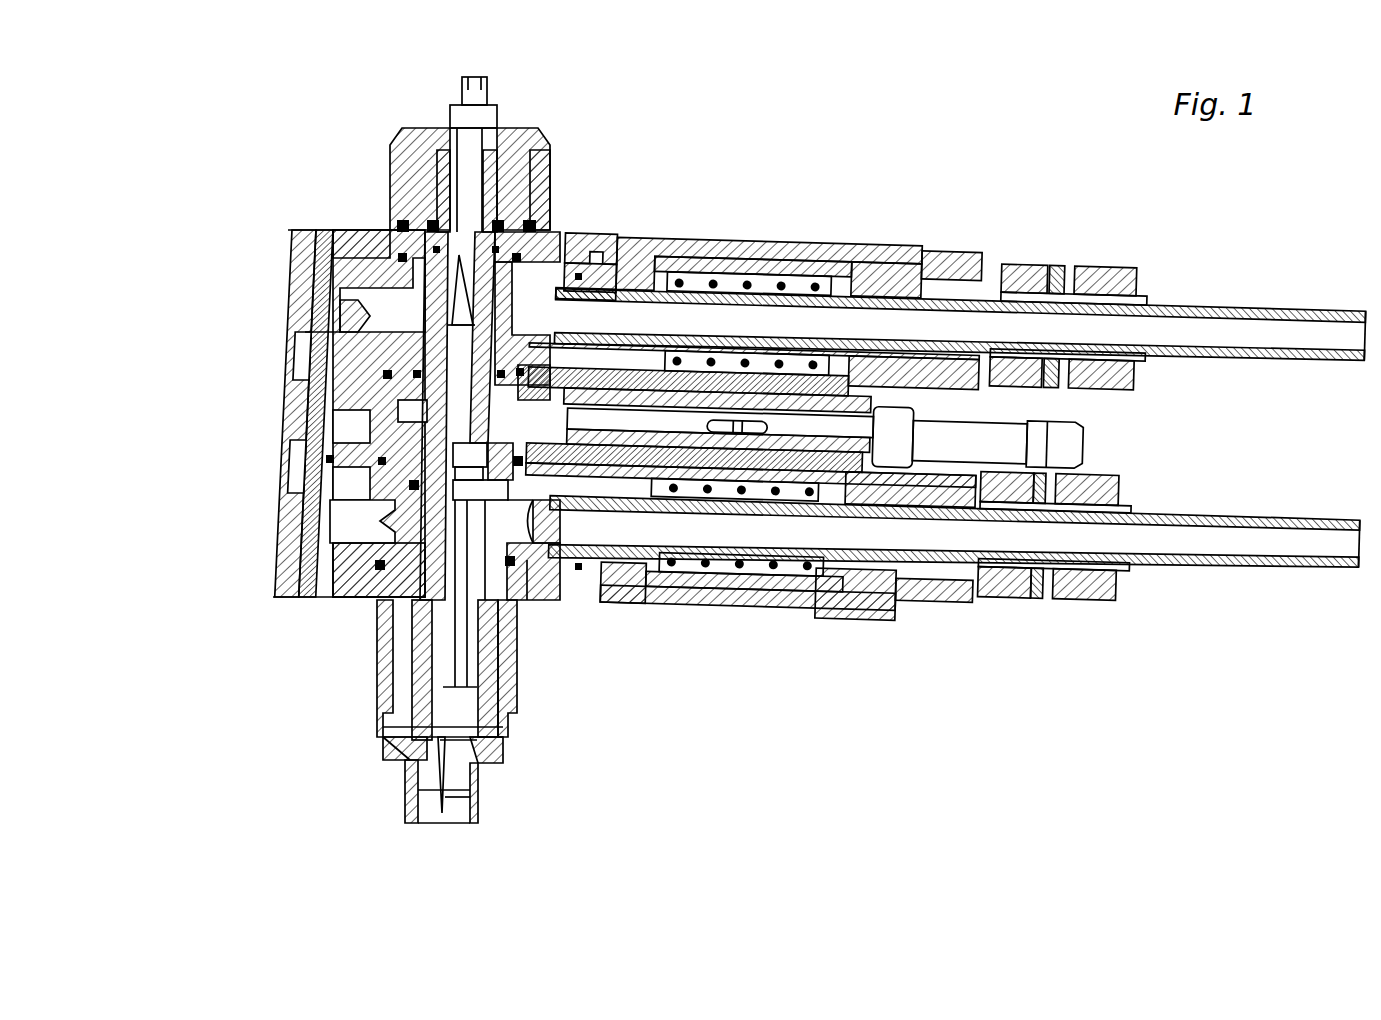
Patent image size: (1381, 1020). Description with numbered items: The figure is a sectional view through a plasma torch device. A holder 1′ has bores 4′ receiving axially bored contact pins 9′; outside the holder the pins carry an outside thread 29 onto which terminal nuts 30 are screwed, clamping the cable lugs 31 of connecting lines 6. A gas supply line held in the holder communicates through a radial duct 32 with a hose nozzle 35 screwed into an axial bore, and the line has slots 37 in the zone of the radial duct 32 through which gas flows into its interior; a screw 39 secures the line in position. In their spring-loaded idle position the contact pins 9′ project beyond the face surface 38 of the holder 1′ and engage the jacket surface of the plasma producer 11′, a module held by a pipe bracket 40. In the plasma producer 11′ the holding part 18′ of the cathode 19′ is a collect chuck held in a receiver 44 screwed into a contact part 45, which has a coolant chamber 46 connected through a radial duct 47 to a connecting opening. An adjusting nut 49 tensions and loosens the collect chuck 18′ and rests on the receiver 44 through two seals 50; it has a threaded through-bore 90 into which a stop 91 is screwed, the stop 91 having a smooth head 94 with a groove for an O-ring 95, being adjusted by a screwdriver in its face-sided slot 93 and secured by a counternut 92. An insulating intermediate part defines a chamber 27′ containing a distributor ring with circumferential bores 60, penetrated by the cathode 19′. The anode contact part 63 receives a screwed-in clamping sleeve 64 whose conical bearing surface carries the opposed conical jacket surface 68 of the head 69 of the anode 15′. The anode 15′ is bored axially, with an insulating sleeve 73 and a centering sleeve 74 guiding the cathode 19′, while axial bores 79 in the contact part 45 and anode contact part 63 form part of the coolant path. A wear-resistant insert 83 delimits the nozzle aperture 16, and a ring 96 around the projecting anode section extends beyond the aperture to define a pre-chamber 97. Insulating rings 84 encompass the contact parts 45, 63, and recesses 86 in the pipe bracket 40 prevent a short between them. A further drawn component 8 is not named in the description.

The holder 1′ is at (812, 240).
The bores 4′ is at (903, 250).
The connecting lines 6 is at (1195, 300).
The spring 8 is at (760, 248).
The contact pins 9′ is at (700, 243).
The plasma producer 11′ is at (286, 623).
The anode 15′ is at (365, 520).
The nozzle aperture 16 is at (435, 812).
The holding part 18′ is at (555, 222).
The cathode 19′ is at (340, 333).
The chamber 27′ is at (345, 470).
The outside thread 29 is at (1148, 298).
The terminal nuts 30 is at (1020, 268).
The cable lugs 31 is at (1063, 268).
The radial duct 32 is at (742, 435).
The hose nozzle 35 is at (1078, 440).
The slots 37 is at (775, 445).
The face surface 38 is at (585, 607).
The screw 39 is at (895, 425).
The pipe bracket 40 is at (274, 593).
The receiver 44 is at (575, 232).
The contact part 45 is at (372, 240).
The coolant chamber 46 is at (300, 237).
The radial duct 47 is at (605, 235).
The adjusting nut 49 is at (405, 160).
The seals 50 is at (430, 218).
The bores 60 is at (405, 410).
The anode contact part 63 is at (340, 570).
The clamping sleeve 64 is at (382, 650).
The conical jacket surface 68 is at (392, 755).
The head 69 is at (480, 765).
The sleeve 73 is at (420, 682).
The centering sleeve 74 is at (400, 728).
The axial bores 79 is at (350, 323).
The insert 83 is at (408, 800).
The rings 84 is at (325, 238).
The recesses 86 is at (296, 353).
The threaded through-bore 90 is at (488, 140).
The stop 91 is at (500, 152).
The counternut 92 is at (458, 112).
The face-sided slot 93 is at (478, 80).
The smooth head 94 is at (456, 150).
The O-ring 95 is at (540, 190).
The ring 96 is at (483, 820).
The pre-chamber 97 is at (455, 815).